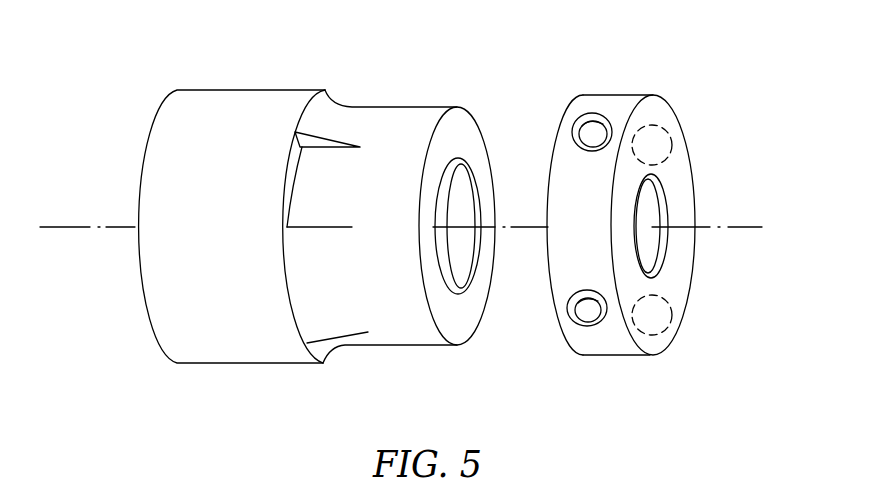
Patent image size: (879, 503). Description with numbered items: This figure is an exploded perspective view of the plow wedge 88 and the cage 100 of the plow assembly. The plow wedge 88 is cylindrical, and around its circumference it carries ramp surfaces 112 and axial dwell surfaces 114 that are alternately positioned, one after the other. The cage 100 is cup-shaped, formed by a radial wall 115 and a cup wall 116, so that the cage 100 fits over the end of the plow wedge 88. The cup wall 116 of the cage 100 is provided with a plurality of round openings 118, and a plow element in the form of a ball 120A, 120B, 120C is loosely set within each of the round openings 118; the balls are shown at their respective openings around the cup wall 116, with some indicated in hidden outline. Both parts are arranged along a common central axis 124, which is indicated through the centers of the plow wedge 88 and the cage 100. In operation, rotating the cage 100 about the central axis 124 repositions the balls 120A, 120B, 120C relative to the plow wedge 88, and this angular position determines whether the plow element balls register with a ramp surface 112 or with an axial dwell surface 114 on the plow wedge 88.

The plow wedge 88 is at (237, 110).
The ramp surfaces 112 is at (327, 112).
The axial dwell surfaces 114 is at (317, 190).
The cage 100 is at (653, 110).
The cup wall 116 is at (578, 187).
The radial wall 115 is at (647, 287).
The round openings 118 is at (598, 118).
The ball 120A is at (585, 122).
The ball 120B is at (658, 141).
The ball 120C is at (660, 317).
The central axis 124 is at (747, 222).